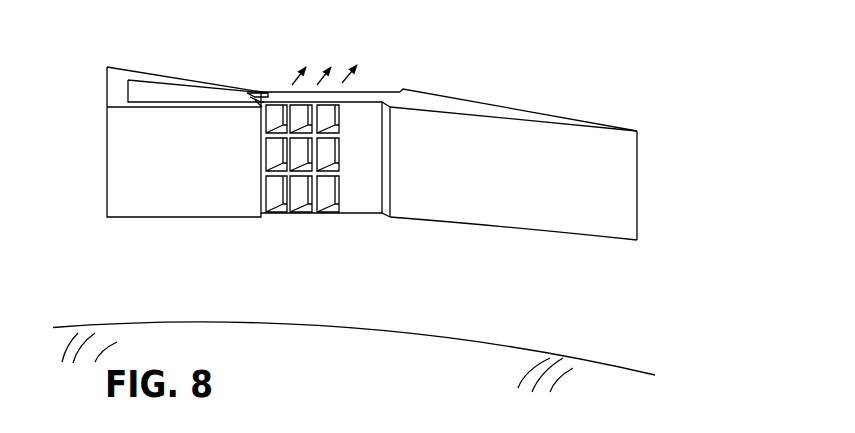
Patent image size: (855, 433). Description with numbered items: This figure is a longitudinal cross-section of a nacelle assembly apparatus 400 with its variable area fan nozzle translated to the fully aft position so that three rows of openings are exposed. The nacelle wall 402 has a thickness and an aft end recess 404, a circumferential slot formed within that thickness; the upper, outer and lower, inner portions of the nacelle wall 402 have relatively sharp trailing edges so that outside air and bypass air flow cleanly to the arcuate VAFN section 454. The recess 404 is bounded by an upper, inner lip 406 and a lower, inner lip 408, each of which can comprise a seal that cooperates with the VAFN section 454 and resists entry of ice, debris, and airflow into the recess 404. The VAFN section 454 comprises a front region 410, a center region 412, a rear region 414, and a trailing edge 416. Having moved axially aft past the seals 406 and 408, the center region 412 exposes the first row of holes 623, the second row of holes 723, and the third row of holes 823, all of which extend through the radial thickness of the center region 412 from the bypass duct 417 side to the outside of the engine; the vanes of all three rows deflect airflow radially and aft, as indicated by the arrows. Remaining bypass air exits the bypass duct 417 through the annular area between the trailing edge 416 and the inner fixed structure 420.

The nacelle assembly apparatus 400 is at (85, 38).
The nacelle wall 402 is at (137, 68).
The aft end recess 404 is at (152, 92).
The upper, inner lip 406 is at (246, 92).
The lower, inner lip 408 is at (257, 100).
The front region 410 is at (253, 97).
The center region 412 is at (305, 97).
The rear region 414 is at (577, 120).
The trailing edge 416 is at (637, 181).
The bypass duct 417 is at (507, 303).
The inner fixed structure 420 is at (413, 379).
The arcuate VAFN section 454 is at (487, 102).
The first row of holes 623 is at (332, 215).
The second row of holes 723 is at (307, 215).
The third row of holes 823 is at (280, 215).